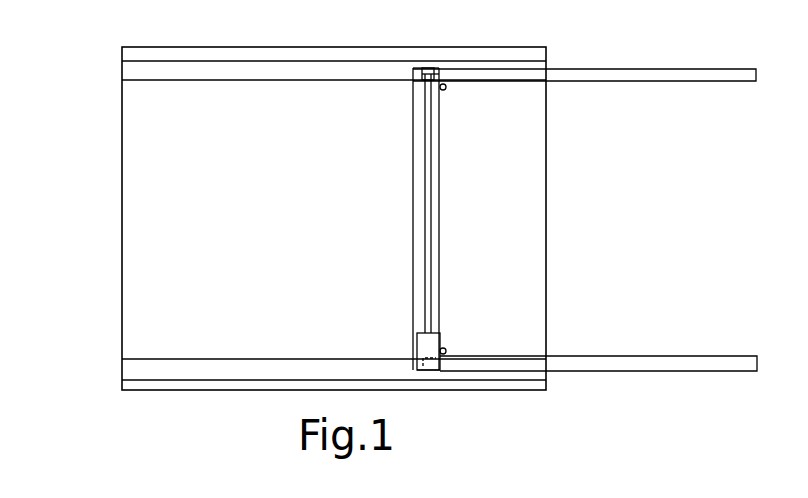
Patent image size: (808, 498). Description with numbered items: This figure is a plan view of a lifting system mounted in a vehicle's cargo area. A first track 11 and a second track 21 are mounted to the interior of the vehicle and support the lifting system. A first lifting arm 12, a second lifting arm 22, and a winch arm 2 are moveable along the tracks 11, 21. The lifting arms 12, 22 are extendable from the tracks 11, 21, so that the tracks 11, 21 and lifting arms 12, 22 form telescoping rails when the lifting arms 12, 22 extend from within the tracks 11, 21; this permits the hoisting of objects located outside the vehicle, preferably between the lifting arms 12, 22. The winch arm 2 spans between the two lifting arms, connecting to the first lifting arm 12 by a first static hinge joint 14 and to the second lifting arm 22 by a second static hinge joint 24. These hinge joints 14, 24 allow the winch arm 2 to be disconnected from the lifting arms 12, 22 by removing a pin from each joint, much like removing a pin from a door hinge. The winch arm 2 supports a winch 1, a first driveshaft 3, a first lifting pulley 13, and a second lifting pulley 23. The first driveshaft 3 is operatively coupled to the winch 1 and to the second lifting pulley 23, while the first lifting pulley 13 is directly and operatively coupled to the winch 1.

The winch 1 is at (417, 333).
The winch arm 2 is at (413, 196).
The first driveshaft 3 is at (439, 203).
The first track 11 is at (202, 359).
The first lifting arm 12 is at (637, 371).
The first lifting pulley 13 is at (425, 370).
The first static hinge joint 14 is at (446, 350).
The second track 21 is at (202, 81).
The second lifting arm 22 is at (637, 68).
The second lifting pulley 23 is at (417, 77).
The second static hinge joint 24 is at (446, 89).